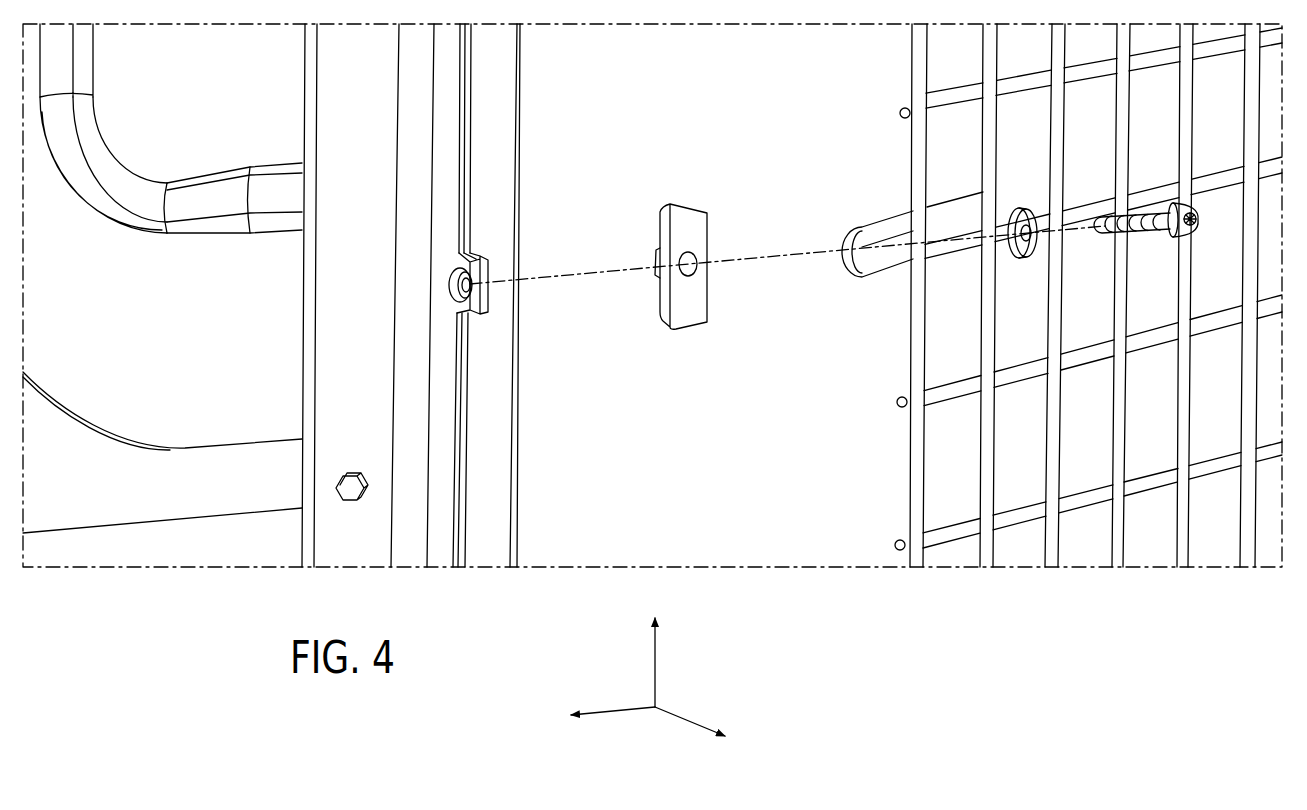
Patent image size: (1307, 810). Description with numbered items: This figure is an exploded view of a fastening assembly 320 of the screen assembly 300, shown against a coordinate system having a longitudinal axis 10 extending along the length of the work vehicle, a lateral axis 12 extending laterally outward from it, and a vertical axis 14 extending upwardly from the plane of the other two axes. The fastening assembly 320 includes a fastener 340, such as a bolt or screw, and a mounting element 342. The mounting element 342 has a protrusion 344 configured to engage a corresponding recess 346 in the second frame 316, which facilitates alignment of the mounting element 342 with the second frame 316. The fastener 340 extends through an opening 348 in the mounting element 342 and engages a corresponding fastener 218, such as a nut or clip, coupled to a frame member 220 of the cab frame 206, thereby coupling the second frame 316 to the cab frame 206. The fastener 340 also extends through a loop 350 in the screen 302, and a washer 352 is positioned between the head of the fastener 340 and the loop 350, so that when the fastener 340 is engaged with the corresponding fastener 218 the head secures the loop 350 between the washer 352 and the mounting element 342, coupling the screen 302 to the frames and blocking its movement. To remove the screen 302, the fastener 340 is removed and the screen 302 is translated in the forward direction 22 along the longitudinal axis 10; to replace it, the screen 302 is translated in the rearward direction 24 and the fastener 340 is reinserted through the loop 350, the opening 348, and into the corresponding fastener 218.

The longitudinal axis 10 is at (617, 710).
The lateral axis 12 is at (685, 718).
The vertical axis 14 is at (653, 665).
The forward direction 22 is at (362, 314).
The rearward direction 24 is at (1228, 106).
The cab frame 206 is at (276, 104).
The corresponding fastener 218 is at (472, 306).
The frame member 220 is at (343, 392).
The screen assembly 300 is at (640, 86).
The screen 302 is at (922, 168).
The second frame 316 is at (495, 90).
The fastening assembly 320 is at (698, 238).
The fastener 340 is at (1152, 232).
The mounting element 342 is at (693, 228).
The protrusion 344 is at (655, 260).
The recess 346 is at (468, 252).
The opening 348 is at (698, 263).
The loop 350 is at (890, 262).
The washer 352 is at (1027, 257).